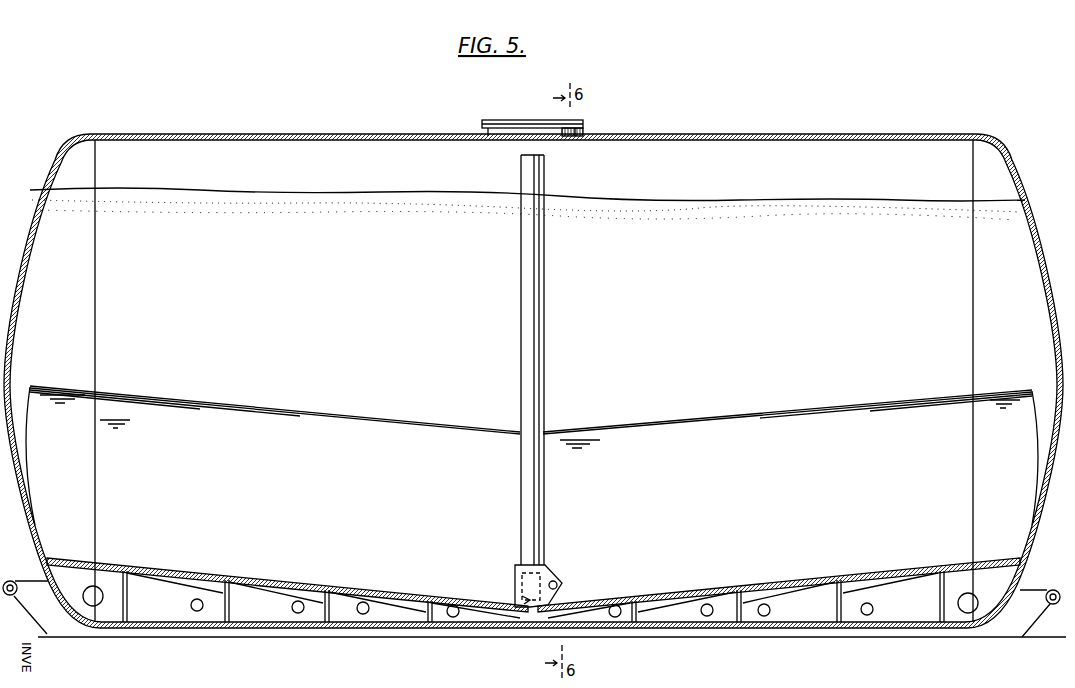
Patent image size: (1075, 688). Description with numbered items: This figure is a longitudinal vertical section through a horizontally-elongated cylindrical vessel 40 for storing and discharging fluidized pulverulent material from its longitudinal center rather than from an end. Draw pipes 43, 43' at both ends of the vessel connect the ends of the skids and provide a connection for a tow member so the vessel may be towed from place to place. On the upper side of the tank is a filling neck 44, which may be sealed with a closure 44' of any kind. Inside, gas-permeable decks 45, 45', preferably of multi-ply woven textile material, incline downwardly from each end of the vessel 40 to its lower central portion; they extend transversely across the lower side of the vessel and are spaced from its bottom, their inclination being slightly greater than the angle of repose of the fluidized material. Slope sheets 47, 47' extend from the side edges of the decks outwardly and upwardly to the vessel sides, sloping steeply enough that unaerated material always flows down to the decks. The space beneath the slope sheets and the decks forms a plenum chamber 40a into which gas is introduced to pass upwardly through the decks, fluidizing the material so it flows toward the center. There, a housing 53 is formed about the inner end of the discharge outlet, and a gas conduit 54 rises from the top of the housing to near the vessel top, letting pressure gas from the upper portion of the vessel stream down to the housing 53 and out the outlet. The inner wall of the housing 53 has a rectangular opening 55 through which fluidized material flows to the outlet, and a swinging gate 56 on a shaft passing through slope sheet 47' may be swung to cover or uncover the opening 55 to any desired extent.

The cylindrical vessel 40 is at (912, 141).
The plenum chamber 40a is at (258, 606).
The draw pipe 43 is at (24, 585).
The draw pipe 43' is at (1043, 592).
The filling neck 44 is at (558, 112).
The closure 44' is at (532, 102).
The gas-permeable deck 45 is at (287, 570).
The gas-permeable deck 45' is at (779, 574).
The slope sheet 47 is at (273, 451).
The slope sheet 47' is at (790, 451).
The housing 53 is at (547, 570).
The gas conduit 54 is at (546, 313).
The rectangular opening 55 is at (516, 574).
The swinging gate 56 is at (514, 596).